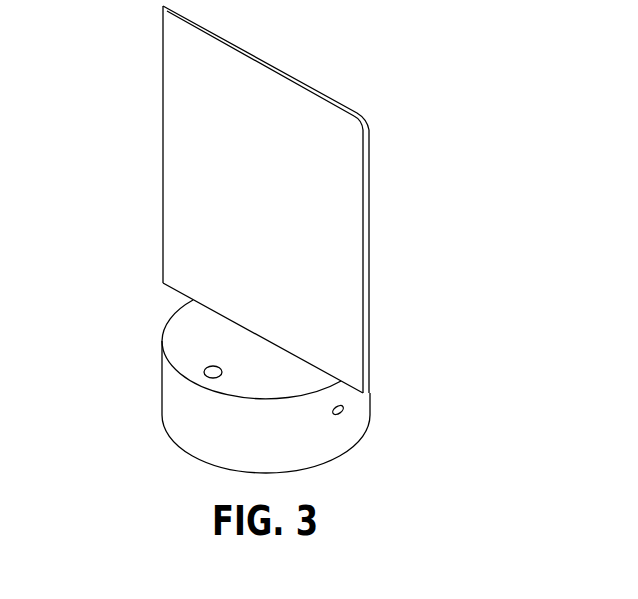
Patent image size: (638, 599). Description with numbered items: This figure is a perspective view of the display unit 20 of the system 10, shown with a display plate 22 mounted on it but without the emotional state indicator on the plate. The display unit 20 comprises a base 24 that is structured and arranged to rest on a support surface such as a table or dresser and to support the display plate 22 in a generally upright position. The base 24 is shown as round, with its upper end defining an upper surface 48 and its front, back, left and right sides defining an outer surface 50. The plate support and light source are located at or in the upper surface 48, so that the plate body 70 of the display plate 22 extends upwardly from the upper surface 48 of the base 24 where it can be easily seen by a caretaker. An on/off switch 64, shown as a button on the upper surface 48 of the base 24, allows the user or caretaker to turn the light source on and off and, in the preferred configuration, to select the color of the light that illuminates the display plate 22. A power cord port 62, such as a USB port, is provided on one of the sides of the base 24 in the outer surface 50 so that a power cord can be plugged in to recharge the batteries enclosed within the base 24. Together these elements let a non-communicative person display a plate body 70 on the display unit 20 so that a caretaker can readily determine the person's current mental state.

The system 10 is at (448, 162).
The display plate 22 is at (371, 265).
The upper surface 48 is at (206, 240).
The plate body 70 is at (195, 145).
The display unit 20 is at (375, 415).
The base 24 is at (161, 388).
The outer surface 50 is at (206, 417).
The on/off switch 64 is at (205, 369).
The power cord port 62 is at (341, 414).